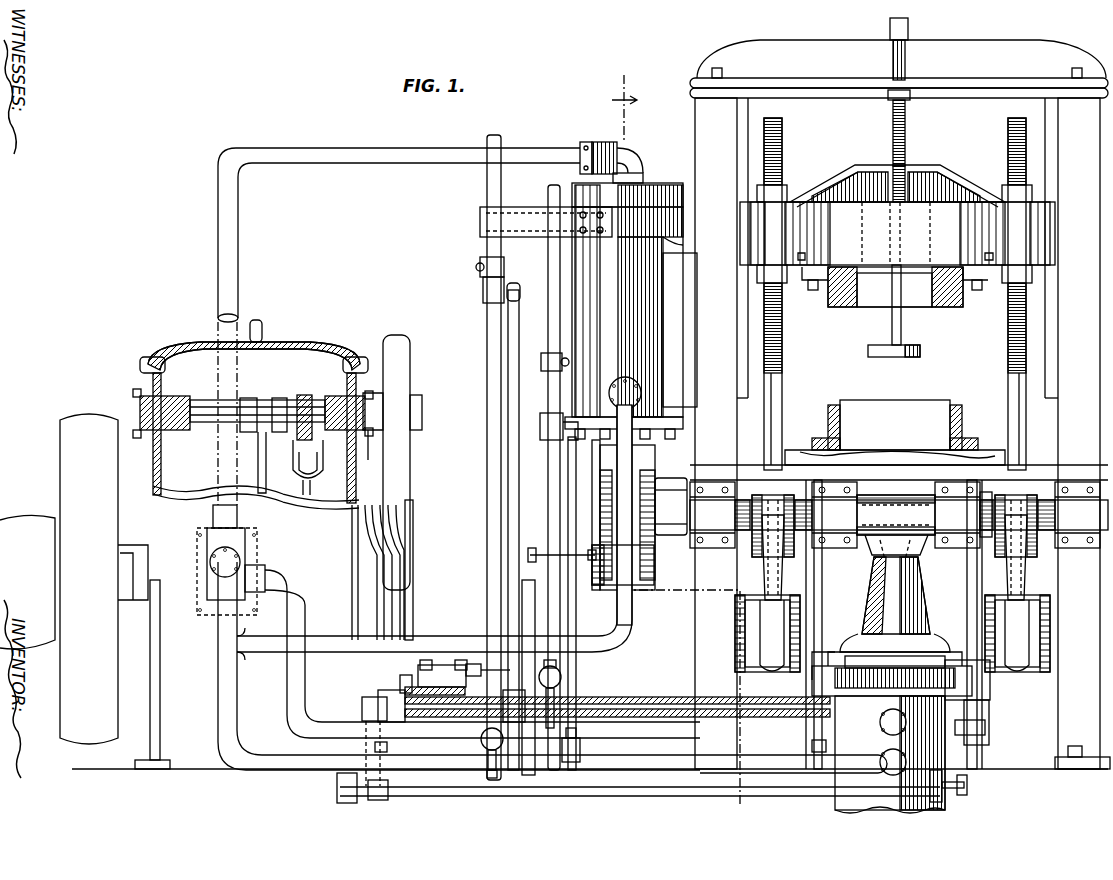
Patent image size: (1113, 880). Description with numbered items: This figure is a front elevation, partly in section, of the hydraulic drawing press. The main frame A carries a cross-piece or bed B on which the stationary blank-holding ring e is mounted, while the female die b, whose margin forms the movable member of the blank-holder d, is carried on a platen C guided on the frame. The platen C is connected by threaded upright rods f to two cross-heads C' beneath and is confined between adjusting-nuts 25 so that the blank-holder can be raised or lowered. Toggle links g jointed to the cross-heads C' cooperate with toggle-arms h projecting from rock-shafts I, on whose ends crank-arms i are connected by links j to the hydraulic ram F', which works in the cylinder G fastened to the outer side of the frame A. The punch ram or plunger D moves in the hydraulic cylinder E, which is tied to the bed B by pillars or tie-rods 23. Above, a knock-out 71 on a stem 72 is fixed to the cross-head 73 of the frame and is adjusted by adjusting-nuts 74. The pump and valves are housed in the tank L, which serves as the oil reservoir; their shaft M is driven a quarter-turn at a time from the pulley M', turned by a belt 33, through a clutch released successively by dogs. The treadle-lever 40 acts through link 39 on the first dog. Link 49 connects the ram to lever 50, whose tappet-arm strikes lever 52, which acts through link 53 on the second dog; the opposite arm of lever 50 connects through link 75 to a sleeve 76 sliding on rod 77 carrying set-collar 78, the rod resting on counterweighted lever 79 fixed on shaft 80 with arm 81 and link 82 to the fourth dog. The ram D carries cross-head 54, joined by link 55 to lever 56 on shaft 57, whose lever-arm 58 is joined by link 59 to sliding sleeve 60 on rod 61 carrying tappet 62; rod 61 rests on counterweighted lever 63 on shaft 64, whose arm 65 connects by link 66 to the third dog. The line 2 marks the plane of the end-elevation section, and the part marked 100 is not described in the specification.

The section line 2 is at (683, 429).
The main frame A is at (885, 418).
The cross-head of the main frame 73 is at (901, 59).
The adjusting-nuts 74 is at (908, 35).
The cross-head or platen C is at (897, 215).
The adjusting-nuts 25 is at (1036, 196).
The upright rods f is at (770, 380).
The female die b is at (895, 287).
The blank-holder d is at (832, 304).
The stem 72 is at (901, 320).
The knock-out 71 is at (890, 357).
The blank-holding ring e is at (895, 425).
The cross-piece or bed B is at (983, 450).
The rock-shaft I is at (900, 502).
The toggle-arm h is at (1032, 490).
The links g is at (768, 572).
The cross-heads C' is at (892, 633).
The hydraulic ram or plunger D is at (916, 622).
The hydraulic cylinder E is at (945, 760).
The cross-head 54 is at (832, 650).
The pillars or tie-rods 23 is at (982, 682).
The lever 56 is at (812, 750).
The link 55 is at (870, 766).
The treadle-lever 40 is at (965, 786).
The cylinder G is at (624, 306).
The upright rod 77 is at (490, 412).
The adjustable tappet or set-collar 78 is at (477, 267).
The sleeve 76 is at (482, 296).
The link 75 is at (512, 460).
The vertically-movable rod 61 is at (549, 496).
The tappet or collar 62 is at (541, 361).
The sliding sleeve 60 is at (541, 432).
The pump F' is at (635, 501).
The crank-arm i is at (671, 506).
The links j is at (640, 552).
The link 49 is at (540, 560).
The link 59 is at (574, 612).
The shaft M is at (253, 414).
The continuously-driven pulley M' is at (401, 462).
The casing or tank L is at (89, 591).
The belt 33 is at (400, 506).
The link 82 is at (395, 540).
The link 53 is at (398, 606).
The link 39 is at (362, 682).
The link 66 is at (365, 664).
The arm 65 is at (362, 712).
The screw shaft 100 is at (604, 700).
The shaft 57 is at (712, 694).
The shaft 80 is at (436, 680).
The lever 52 is at (448, 665).
The arm 81 is at (410, 672).
The counterweighted lever 63 is at (562, 676).
The shaft 64 is at (465, 706).
The counterweighted lever 79 is at (490, 755).
The lever 50 is at (522, 745).
The lever-arm 58 is at (580, 748).